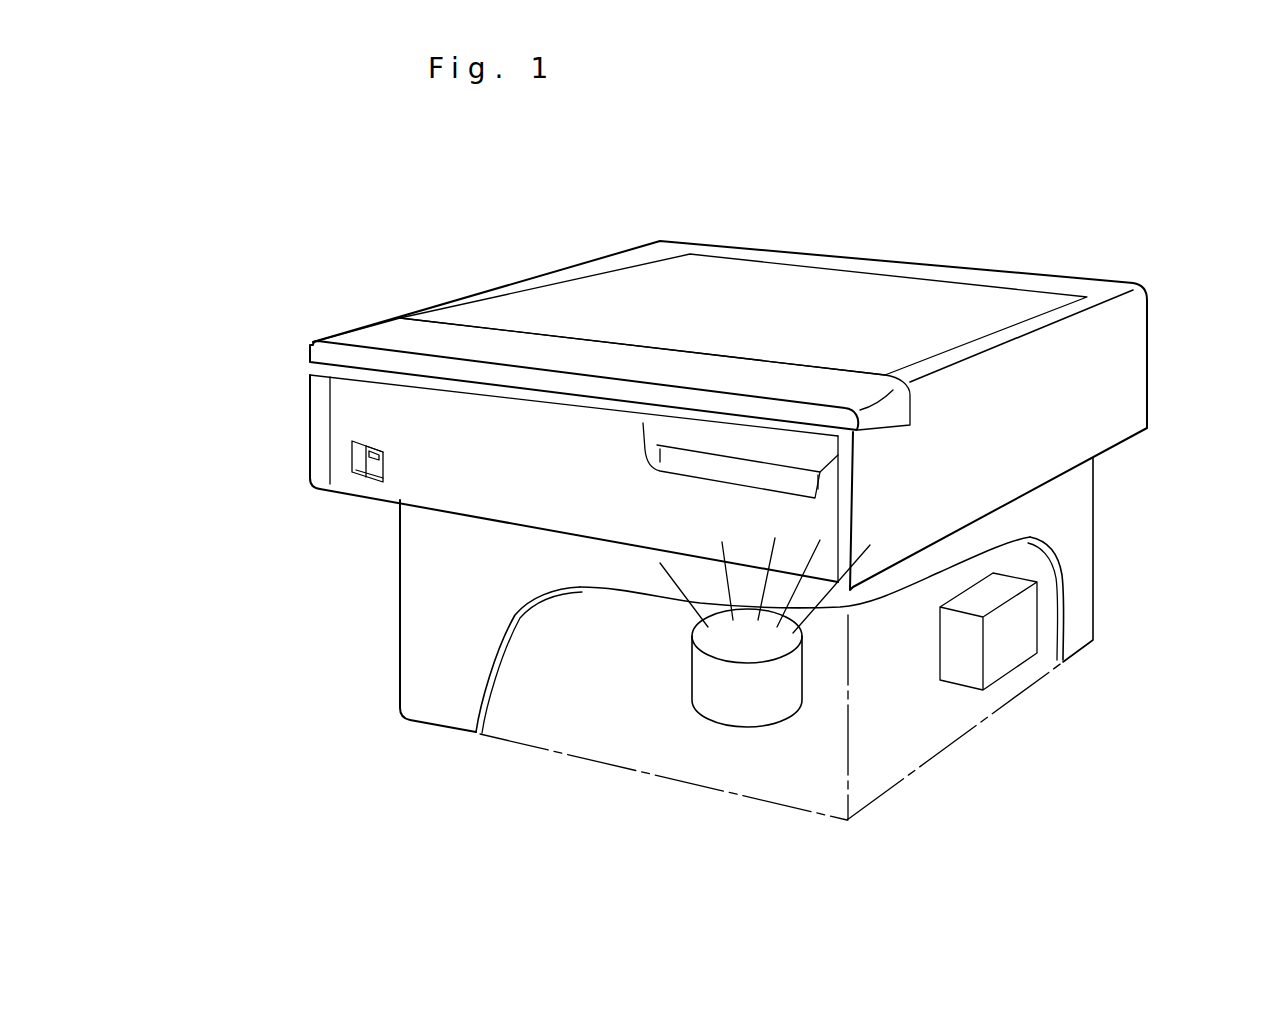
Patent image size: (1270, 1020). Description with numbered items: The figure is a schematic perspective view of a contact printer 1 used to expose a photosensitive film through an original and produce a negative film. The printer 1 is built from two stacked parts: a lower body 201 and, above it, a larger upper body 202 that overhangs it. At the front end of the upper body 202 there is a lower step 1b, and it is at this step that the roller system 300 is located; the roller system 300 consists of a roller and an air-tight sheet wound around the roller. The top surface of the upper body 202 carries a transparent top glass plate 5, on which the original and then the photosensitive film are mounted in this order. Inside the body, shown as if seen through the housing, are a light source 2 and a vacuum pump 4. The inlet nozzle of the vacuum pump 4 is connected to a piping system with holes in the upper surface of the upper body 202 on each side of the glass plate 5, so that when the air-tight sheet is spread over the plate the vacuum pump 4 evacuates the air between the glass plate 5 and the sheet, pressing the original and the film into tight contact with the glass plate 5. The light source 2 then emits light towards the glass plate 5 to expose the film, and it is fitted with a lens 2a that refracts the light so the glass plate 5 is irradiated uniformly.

The contact printer 1 is at (1178, 277).
The lower step 1b is at (887, 436).
The light source 2 is at (789, 689).
The lens 2a is at (790, 637).
The vacuum pump 4 is at (1010, 650).
The transparent top glass plate 5 is at (940, 295).
The lower body 201 is at (413, 697).
The upper body 202 is at (340, 458).
The roller system 300 is at (363, 333).